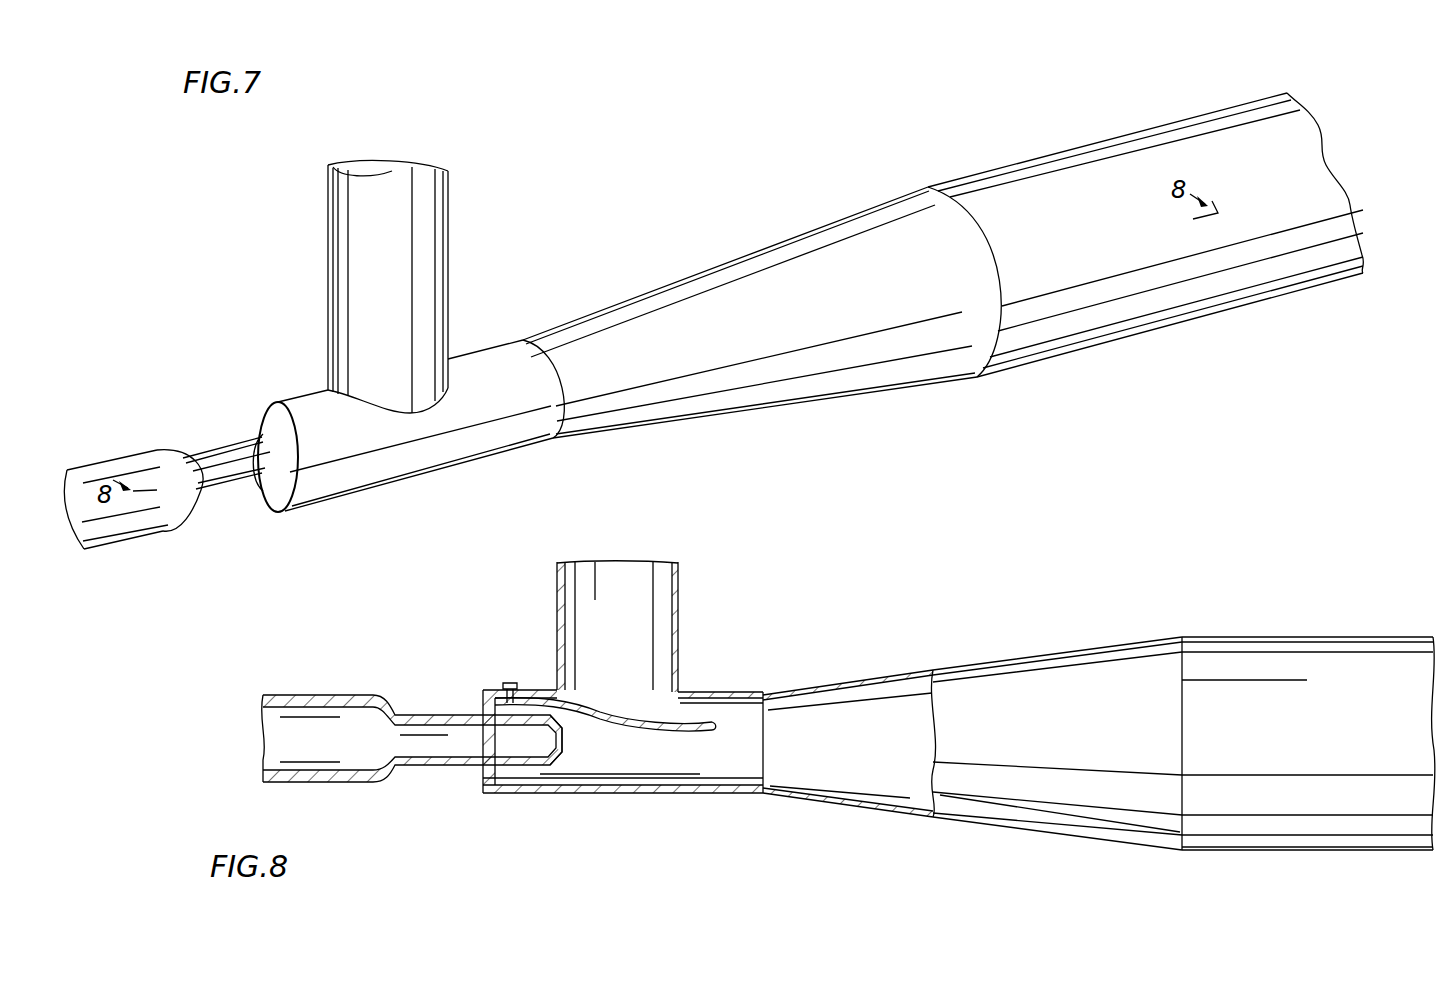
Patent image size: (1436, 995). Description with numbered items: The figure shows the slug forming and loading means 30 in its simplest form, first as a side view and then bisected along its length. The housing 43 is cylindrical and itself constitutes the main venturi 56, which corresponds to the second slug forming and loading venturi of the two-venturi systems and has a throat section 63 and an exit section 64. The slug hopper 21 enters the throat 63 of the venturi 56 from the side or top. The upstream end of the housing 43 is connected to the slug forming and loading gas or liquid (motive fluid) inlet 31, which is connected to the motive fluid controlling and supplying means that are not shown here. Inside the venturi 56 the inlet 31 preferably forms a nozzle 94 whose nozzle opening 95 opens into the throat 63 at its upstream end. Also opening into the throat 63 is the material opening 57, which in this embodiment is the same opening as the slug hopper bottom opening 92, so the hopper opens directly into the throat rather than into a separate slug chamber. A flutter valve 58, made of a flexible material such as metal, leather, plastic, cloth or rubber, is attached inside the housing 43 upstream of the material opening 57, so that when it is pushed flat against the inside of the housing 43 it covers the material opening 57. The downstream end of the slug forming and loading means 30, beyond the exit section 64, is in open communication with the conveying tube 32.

In FIG. 7, the slug hopper 21 is at (450, 212).
In FIG. 8, the slug hopper 21 is at (680, 584).
In FIG. 7, the slug forming and loading means 30 is at (612, 203).
In FIG. 8, the slug forming and loading means 30 is at (822, 613).
In FIG. 7, the slug forming and loading gas or liquid (motive fluid) inlet 31 is at (223, 448).
In FIG. 8, the slug forming and loading gas or liquid (motive fluid) inlet 31 is at (441, 715).
In FIG. 7, the conveying tube 32 is at (1134, 128).
In FIG. 8, the conveying tube 32 is at (1312, 637).
In FIG. 7, the housing 43 is at (607, 308).
In FIG. 8, the housing 43 is at (911, 670).
In FIG. 7, the main venturi 56 is at (418, 470).
In FIG. 8, the main venturi 56 is at (736, 787).
In FIG. 8, the material opening 57 is at (600, 700).
In FIG. 8, the flutter valve 58 is at (667, 722).
In FIG. 8, the throat section 63 is at (637, 765).
In FIG. 8, the exit section 64 is at (1025, 820).
In FIG. 8, the slug hopper bottom opening 92 is at (597, 700).
In FIG. 8, the nozzle 94 is at (517, 768).
In FIG. 8, the nozzle opening 95 is at (573, 748).